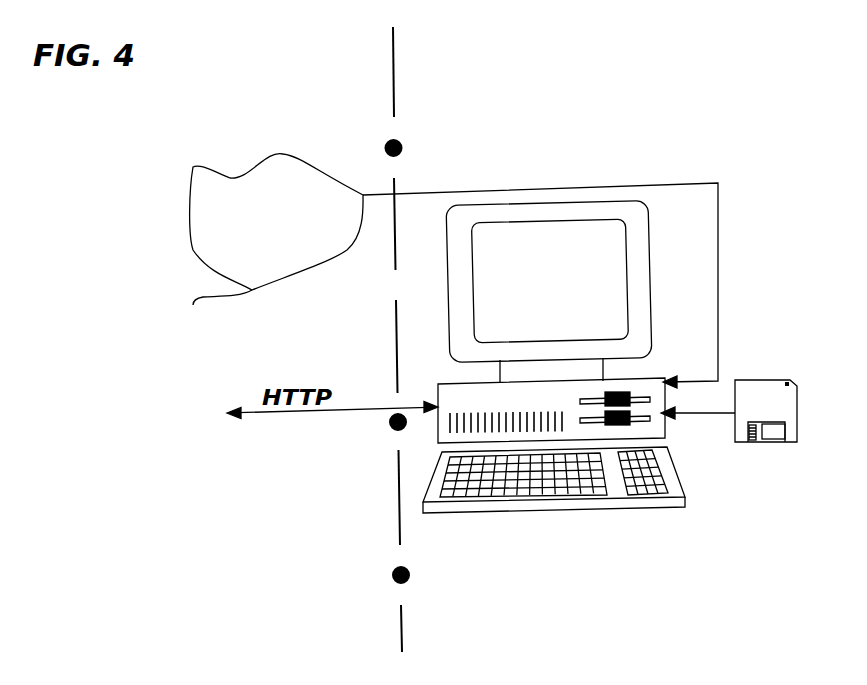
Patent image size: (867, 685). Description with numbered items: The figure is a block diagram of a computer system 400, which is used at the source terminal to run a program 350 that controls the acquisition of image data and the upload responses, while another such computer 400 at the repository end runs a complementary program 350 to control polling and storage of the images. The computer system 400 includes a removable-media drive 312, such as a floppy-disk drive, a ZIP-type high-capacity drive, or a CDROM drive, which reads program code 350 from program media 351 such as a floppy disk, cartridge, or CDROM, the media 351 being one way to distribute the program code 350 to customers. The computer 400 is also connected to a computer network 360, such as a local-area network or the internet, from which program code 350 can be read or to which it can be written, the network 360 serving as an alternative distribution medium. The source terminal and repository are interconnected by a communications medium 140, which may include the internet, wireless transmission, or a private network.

The communications medium 140 is at (394, 84).
The computer network 360 is at (518, 187).
The program code 350 is at (795, 363).
The program media 351 is at (753, 380).
The removable-media drive 312 is at (650, 419).
The computer system 400 is at (575, 608).